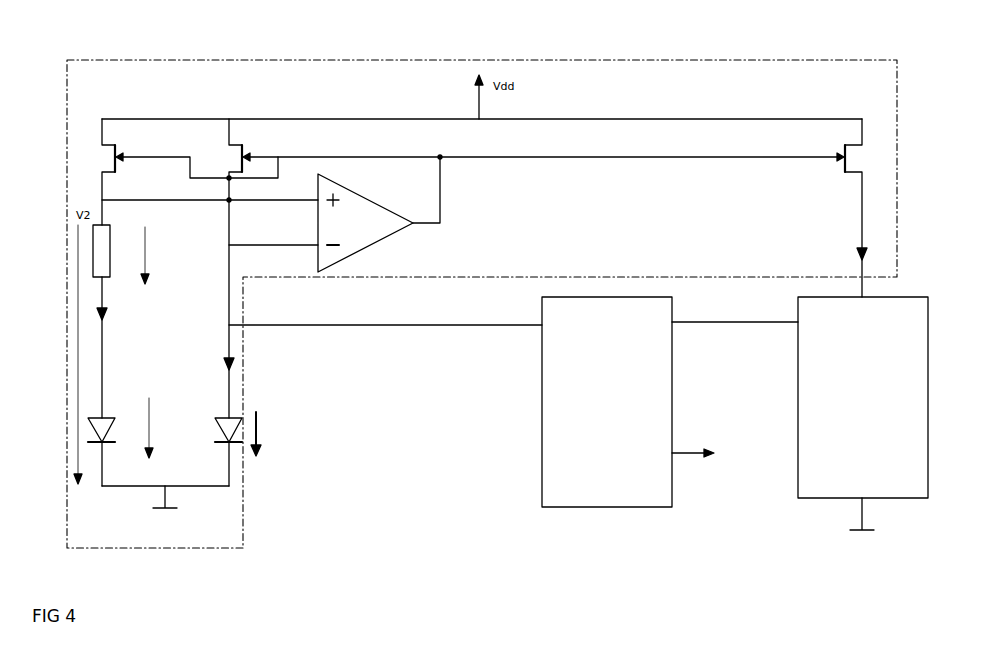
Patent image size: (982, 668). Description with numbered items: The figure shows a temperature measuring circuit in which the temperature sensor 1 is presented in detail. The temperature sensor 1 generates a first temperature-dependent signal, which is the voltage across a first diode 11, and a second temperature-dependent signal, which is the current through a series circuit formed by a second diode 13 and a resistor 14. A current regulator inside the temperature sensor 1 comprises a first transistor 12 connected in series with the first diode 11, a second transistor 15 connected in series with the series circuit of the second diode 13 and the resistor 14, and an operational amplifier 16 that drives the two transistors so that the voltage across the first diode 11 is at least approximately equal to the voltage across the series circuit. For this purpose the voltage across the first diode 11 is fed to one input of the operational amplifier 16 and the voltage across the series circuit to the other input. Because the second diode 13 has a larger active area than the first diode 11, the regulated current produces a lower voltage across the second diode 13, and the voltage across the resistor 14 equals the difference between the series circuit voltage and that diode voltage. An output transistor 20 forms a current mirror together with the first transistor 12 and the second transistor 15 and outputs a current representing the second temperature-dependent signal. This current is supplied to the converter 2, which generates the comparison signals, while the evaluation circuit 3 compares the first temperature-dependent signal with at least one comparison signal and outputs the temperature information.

The temperature sensor 1 is at (383, 58).
The converter 2 is at (800, 413).
The evaluation circuit 3 is at (473, 402).
The first diode 11 is at (218, 413).
The first transistor 12 is at (525, 268).
The second diode 13 is at (108, 414).
The resistor 14 is at (133, 321).
The second transistor 15 is at (157, 172).
The operational amplifier 16 is at (388, 204).
The output transistor 20 is at (869, 208).